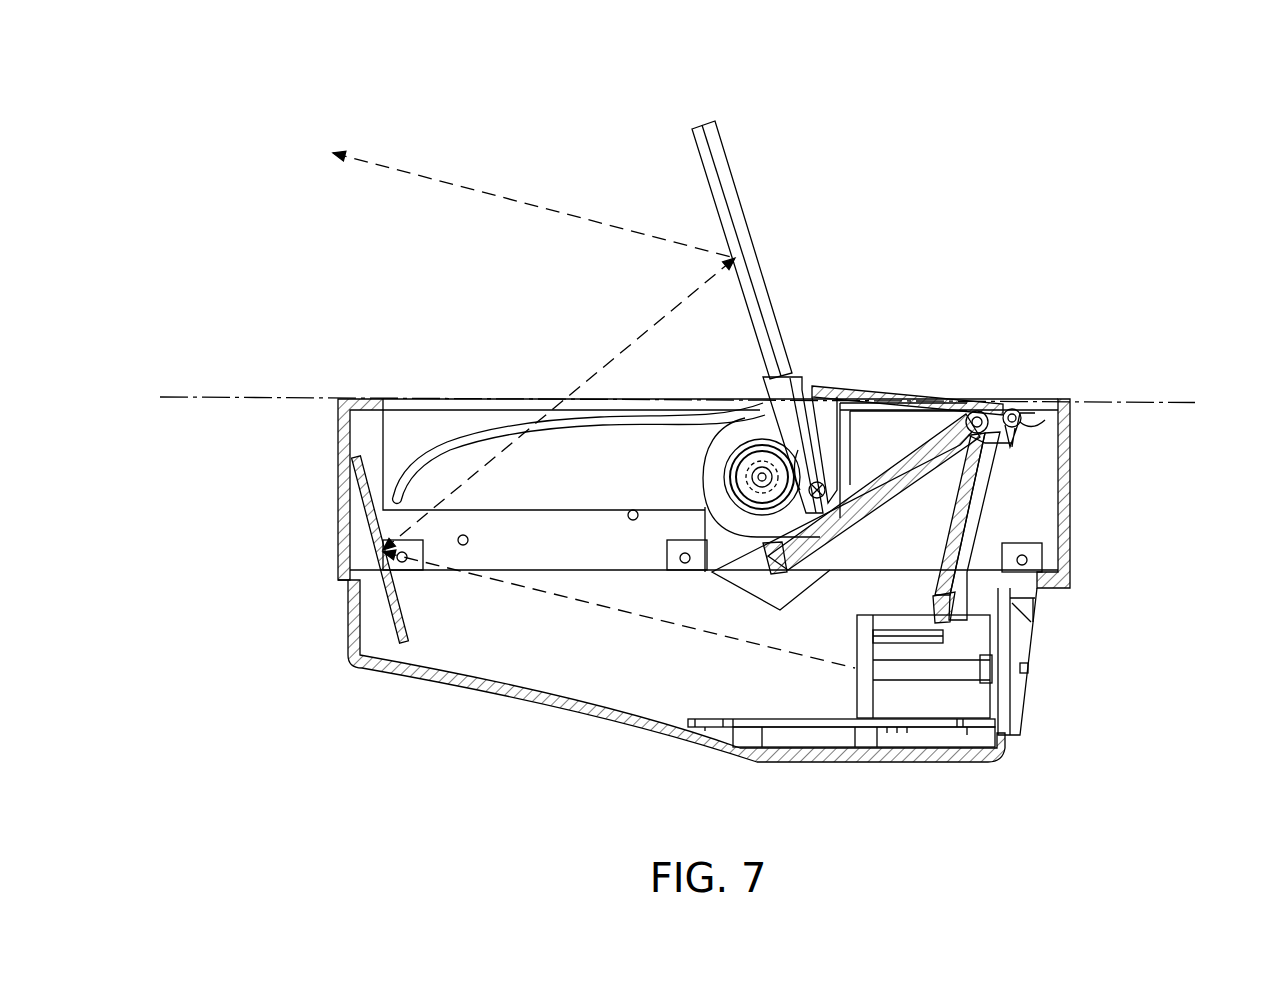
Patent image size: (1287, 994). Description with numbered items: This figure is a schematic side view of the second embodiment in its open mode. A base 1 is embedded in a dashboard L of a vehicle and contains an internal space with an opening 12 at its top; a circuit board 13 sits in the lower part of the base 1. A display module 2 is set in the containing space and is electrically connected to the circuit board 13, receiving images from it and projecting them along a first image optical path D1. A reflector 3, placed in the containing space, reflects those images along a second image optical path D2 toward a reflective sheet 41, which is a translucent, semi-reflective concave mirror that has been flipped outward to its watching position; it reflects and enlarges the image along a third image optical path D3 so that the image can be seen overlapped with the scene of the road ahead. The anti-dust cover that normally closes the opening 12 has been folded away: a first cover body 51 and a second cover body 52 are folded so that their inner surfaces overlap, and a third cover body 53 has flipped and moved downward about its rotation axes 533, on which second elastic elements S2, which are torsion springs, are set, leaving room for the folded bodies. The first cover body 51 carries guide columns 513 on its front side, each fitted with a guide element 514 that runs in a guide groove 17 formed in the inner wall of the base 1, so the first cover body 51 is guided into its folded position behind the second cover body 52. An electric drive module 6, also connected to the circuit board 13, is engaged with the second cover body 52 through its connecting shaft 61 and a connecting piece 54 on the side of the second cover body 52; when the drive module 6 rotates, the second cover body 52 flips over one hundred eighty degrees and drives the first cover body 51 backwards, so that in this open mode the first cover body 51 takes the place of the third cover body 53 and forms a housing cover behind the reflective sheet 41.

The base 1 is at (350, 618).
The display module 2 is at (983, 638).
The reflector 3 is at (400, 605).
The electric drive module 6 is at (717, 455).
The opening 12 is at (492, 400).
The circuit board 13 is at (822, 727).
The guide groove 17 is at (458, 447).
The reflective sheet 41 is at (713, 190).
The first cover body 51 is at (839, 403).
The second cover body 52 is at (982, 520).
The third cover body 53 is at (975, 500).
The connecting piece 54 is at (905, 470).
The connecting shaft 61 is at (748, 460).
The guide column 513 is at (852, 398).
The guide element 514 is at (833, 478).
The rotation axis 533 is at (1013, 410).
The second elastic element S2 is at (1043, 405).
The dashboard L is at (290, 393).
The first image optical path D1 is at (595, 605).
The second image optical path D2 is at (605, 365).
The third image optical path D3 is at (477, 190).